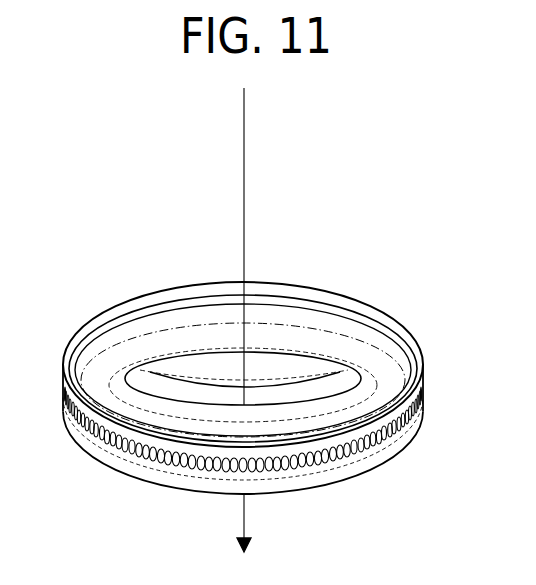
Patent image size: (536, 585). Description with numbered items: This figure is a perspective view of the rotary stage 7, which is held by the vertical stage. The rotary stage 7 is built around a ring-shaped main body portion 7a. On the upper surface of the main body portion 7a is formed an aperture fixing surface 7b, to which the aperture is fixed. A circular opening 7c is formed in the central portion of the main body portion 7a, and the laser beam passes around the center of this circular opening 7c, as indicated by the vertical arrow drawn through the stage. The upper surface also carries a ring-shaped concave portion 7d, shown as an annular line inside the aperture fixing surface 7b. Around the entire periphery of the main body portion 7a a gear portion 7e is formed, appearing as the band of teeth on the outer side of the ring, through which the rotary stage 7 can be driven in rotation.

The rotary stage 7 is at (432, 340).
The ring-shaped main body portion 7a is at (186, 494).
The aperture fixing surface 7b is at (166, 311).
The circular opening 7c is at (257, 398).
The ring-shaped concave portion 7d is at (122, 346).
The gear portion 7e is at (67, 416).